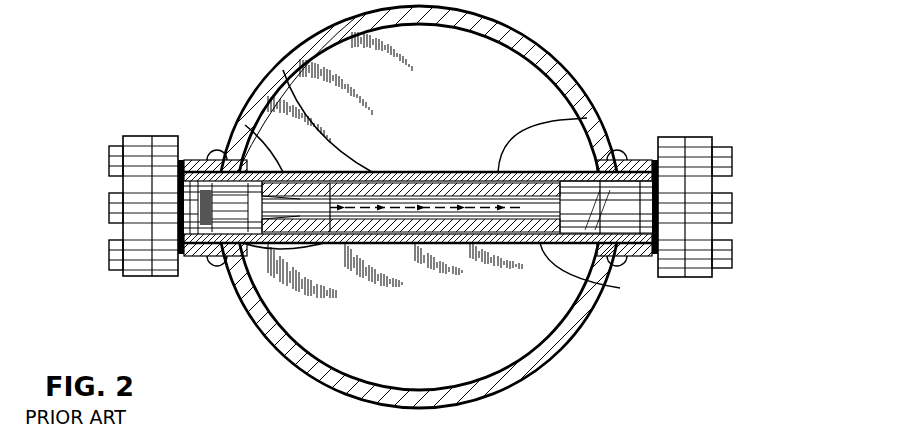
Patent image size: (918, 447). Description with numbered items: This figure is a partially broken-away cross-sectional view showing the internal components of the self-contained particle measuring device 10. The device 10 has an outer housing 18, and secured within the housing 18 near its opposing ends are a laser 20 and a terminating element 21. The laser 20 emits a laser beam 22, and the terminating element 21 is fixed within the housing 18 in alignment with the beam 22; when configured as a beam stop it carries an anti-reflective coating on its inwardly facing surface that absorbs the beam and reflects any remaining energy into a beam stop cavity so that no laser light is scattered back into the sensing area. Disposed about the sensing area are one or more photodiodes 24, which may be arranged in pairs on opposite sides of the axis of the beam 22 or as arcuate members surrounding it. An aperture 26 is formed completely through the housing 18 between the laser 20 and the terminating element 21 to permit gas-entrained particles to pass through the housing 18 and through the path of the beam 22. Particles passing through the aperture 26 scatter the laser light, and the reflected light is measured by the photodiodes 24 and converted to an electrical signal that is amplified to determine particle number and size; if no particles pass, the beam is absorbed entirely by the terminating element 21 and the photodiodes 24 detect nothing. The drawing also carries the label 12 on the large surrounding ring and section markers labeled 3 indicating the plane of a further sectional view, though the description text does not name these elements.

The self-contained particle measuring device 10 is at (687, 117).
The pipe 12 is at (542, 43).
The outer housing 18 is at (236, 215).
The laser 20 is at (212, 165).
The terminating element 21 is at (620, 198).
The laser beam 22 is at (283, 82).
The photodiodes 24 is at (587, 118).
The aperture 26 is at (213, 252).
The section line of FIG. 3 is at (383, 110).